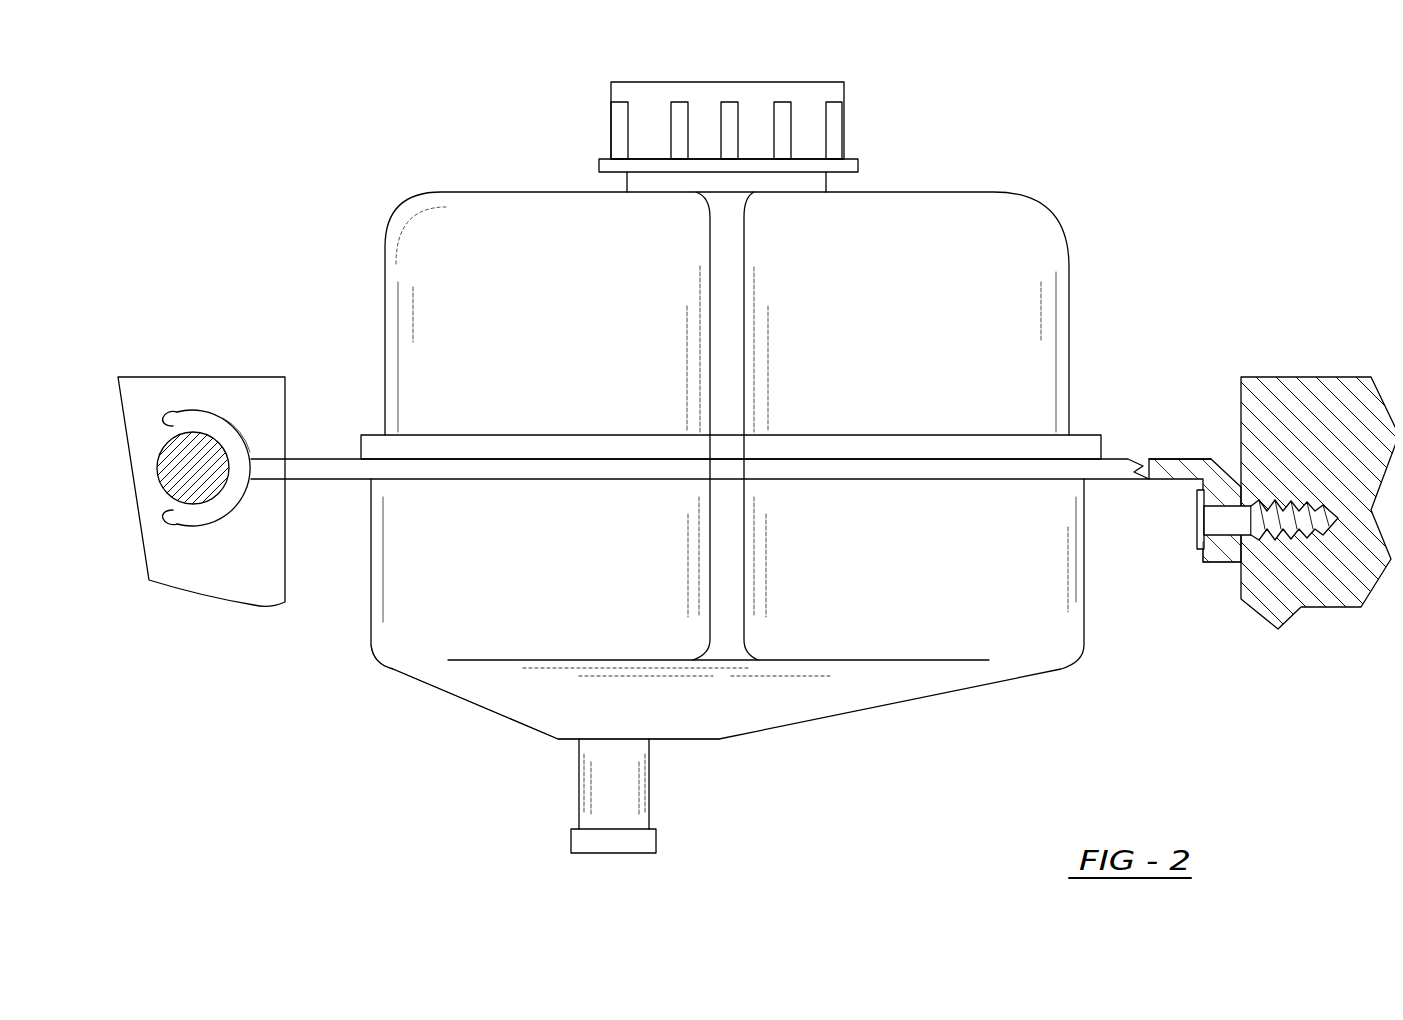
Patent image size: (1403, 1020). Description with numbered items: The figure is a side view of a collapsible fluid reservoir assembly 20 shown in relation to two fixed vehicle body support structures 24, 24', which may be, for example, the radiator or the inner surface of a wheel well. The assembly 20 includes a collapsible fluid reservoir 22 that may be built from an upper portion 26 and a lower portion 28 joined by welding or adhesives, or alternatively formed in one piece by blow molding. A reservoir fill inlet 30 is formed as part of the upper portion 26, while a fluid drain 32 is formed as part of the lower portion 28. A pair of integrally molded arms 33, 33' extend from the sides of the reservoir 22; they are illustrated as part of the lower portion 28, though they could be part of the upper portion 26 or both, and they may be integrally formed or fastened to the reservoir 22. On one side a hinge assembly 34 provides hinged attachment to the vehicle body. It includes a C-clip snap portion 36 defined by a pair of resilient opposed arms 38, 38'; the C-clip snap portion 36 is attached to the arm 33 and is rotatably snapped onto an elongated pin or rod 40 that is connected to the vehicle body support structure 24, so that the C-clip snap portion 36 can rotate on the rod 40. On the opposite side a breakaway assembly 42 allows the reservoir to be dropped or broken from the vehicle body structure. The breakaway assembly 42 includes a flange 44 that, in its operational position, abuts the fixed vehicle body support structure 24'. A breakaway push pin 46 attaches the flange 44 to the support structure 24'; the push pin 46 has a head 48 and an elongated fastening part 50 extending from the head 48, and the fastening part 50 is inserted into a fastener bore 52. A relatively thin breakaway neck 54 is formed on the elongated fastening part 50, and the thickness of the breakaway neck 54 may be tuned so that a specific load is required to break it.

The collapsible fluid reservoir assembly 20 is at (1103, 133).
The collapsible fluid reservoir 22 is at (1003, 258).
The vehicle body support structure 24 is at (201, 541).
The vehicle body support structure 24' is at (1318, 540).
The upper portion 26 is at (478, 225).
The lower portion 28 is at (502, 692).
The reservoir fill inlet 30 is at (637, 112).
The fluid drain 32 is at (618, 785).
The arm 33 is at (700, 405).
The arm 33' is at (1161, 400).
The hinge assembly 34 is at (228, 425).
The C-clip snap portion 36 is at (203, 512).
The resilient opposed arm 38 is at (137, 569).
The resilient opposed arm 38' is at (159, 355).
The elongated pin or rod 40 is at (183, 466).
The breakaway assembly 42 is at (1188, 455).
The flange 44 is at (1208, 556).
The breakaway push pin 46 is at (1220, 527).
The head 48 is at (1195, 516).
The elongated fastening part 50 is at (1290, 500).
The fastener bore 52 is at (1283, 520).
The breakaway neck 54 is at (1230, 522).